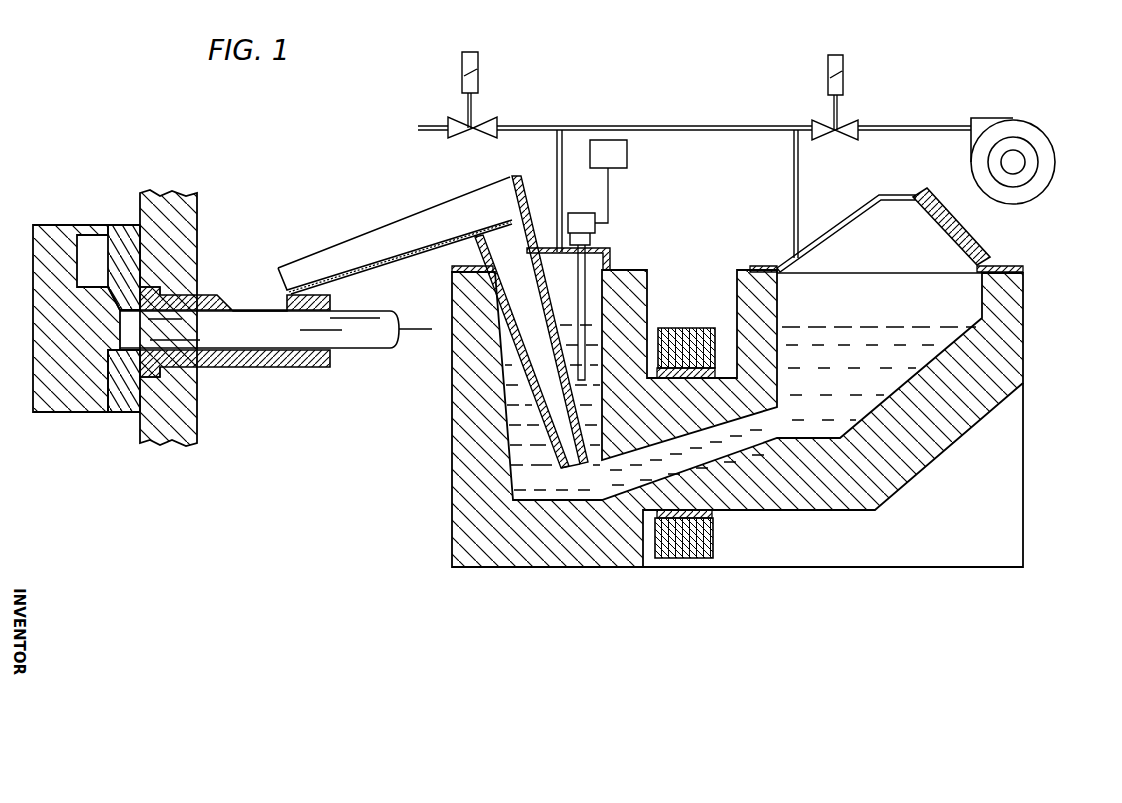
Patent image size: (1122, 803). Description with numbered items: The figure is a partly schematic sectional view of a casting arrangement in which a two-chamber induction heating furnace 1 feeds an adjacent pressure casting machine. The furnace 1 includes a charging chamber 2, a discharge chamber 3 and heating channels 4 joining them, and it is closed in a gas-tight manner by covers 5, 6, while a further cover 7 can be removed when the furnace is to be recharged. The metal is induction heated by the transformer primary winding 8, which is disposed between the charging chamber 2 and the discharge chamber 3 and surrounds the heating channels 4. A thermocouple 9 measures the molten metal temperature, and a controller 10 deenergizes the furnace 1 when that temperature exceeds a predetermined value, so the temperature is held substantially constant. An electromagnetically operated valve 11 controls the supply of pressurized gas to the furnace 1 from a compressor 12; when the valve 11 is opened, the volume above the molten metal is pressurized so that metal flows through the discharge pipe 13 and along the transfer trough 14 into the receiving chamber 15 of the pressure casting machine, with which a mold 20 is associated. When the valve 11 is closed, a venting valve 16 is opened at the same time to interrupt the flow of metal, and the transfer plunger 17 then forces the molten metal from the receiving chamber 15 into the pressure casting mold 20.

The two-chamber induction heating furnace 1 is at (966, 521).
The charging chamber 2 is at (897, 362).
The discharge chamber 3 is at (525, 388).
The heating channels 4 is at (628, 466).
The cover 5 is at (612, 257).
The cover 6 is at (840, 229).
The cover 7 is at (970, 233).
The transformer primary winding 8 is at (683, 546).
The thermocouple 9 is at (580, 221).
The controller 10 is at (604, 156).
The electromagnetically operated valve 11 is at (843, 86).
The compressor 12 is at (1022, 147).
The discharge pipe 13 is at (567, 427).
The transfer trough 14 is at (382, 246).
The receiving chamber 15 is at (256, 361).
The venting valve 16 is at (470, 84).
The transfer plunger 17 is at (372, 340).
The mold 20 is at (73, 362).